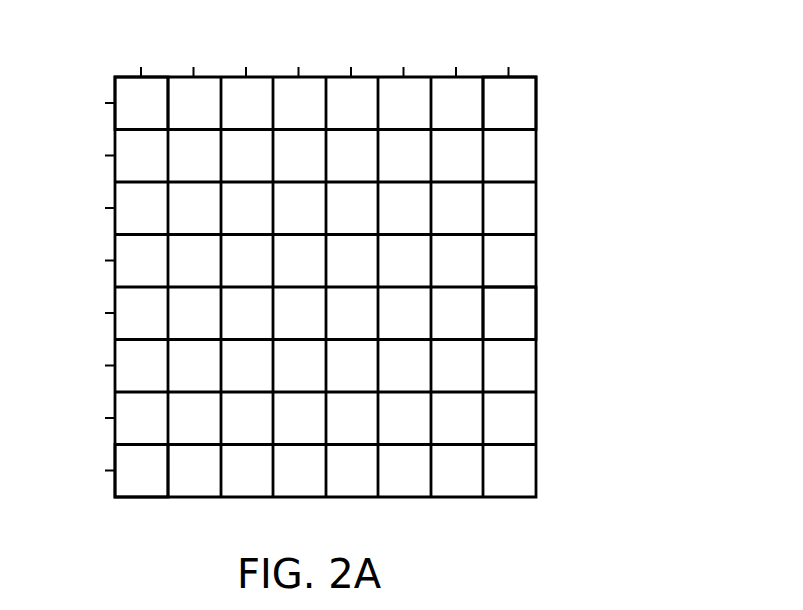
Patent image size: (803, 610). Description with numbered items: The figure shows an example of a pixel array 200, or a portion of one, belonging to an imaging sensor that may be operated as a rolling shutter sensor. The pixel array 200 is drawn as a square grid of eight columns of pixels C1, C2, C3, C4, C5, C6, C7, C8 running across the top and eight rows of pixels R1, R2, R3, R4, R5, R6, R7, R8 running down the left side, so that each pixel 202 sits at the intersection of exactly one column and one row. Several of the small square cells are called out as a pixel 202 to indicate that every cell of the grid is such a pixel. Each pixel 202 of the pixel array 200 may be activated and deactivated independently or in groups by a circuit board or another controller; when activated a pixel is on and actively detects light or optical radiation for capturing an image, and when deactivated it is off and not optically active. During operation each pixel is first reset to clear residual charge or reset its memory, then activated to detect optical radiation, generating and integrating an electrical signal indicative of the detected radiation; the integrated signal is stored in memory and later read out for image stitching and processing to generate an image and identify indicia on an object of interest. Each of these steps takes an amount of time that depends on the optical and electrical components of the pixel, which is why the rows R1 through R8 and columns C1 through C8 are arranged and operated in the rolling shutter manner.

The pixel array 200 is at (367, 253).
The pixel 202 is at (137, 88).
The row of pixels R1 is at (78, 107).
The row of pixels R2 is at (78, 160).
The row of pixels R3 is at (78, 212).
The row of pixels R4 is at (78, 265).
The row of pixels R5 is at (78, 317).
The row of pixels R6 is at (78, 370).
The row of pixels R7 is at (78, 422).
The row of pixels R8 is at (78, 475).
The column of pixels C1 is at (144, 51).
The column of pixels C2 is at (196, 51).
The column of pixels C3 is at (249, 51).
The column of pixels C4 is at (301, 51).
The column of pixels C5 is at (354, 51).
The column of pixels C6 is at (406, 51).
The column of pixels C7 is at (459, 51).
The column of pixels C8 is at (511, 51).